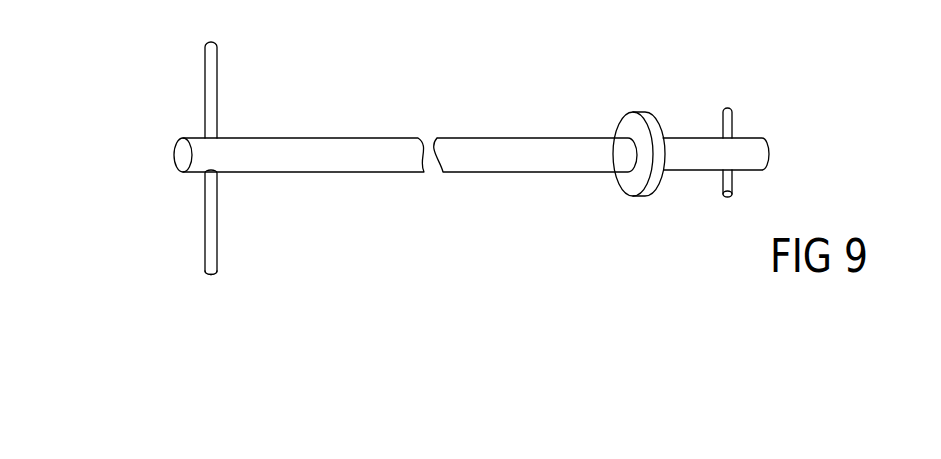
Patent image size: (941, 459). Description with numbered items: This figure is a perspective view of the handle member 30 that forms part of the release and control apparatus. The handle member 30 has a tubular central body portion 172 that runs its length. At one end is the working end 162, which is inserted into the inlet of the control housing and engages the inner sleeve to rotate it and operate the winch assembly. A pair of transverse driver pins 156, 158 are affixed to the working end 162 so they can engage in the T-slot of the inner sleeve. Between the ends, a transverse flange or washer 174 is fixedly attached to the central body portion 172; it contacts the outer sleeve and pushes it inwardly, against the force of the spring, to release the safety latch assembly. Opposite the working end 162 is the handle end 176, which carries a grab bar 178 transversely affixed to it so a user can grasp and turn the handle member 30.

The handle member 30 is at (438, 80).
The tubular central body portion 172 is at (528, 167).
The transverse flange or washer 174 is at (629, 123).
The handle end 176 is at (170, 186).
The grab bar 178 is at (208, 88).
The transverse driver pin 156 is at (724, 111).
The transverse driver pin 158 is at (733, 196).
The working end 162 is at (765, 124).